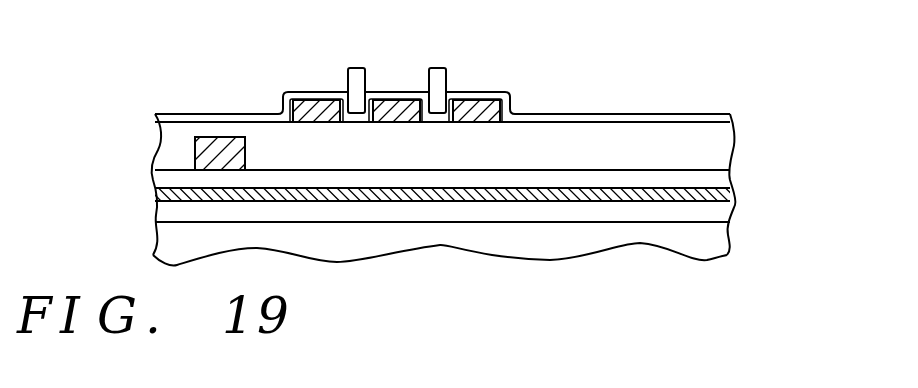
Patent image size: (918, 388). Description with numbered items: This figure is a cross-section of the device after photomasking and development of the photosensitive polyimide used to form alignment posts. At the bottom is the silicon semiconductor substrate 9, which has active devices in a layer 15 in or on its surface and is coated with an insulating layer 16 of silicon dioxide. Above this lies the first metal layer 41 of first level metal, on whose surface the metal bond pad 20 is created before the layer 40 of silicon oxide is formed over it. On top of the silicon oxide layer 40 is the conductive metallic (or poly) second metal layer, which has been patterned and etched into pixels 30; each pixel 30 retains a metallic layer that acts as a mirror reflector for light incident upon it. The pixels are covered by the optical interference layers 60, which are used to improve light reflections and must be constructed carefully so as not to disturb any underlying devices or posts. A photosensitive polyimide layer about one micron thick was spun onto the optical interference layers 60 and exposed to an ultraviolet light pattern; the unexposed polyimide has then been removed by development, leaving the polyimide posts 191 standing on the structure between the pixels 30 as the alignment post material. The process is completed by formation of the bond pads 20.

The substrate 9 is at (720, 238).
The active device layer 15 is at (722, 210).
The insulating layer 16 is at (725, 193).
The metal bond pad 20 is at (208, 153).
The pixel 30 is at (397, 107).
The silicon oxide layer 40 is at (720, 150).
The first metal layer 41 is at (163, 179).
The optical interference layers 60 is at (315, 97).
The polyimide posts 191 is at (358, 80).